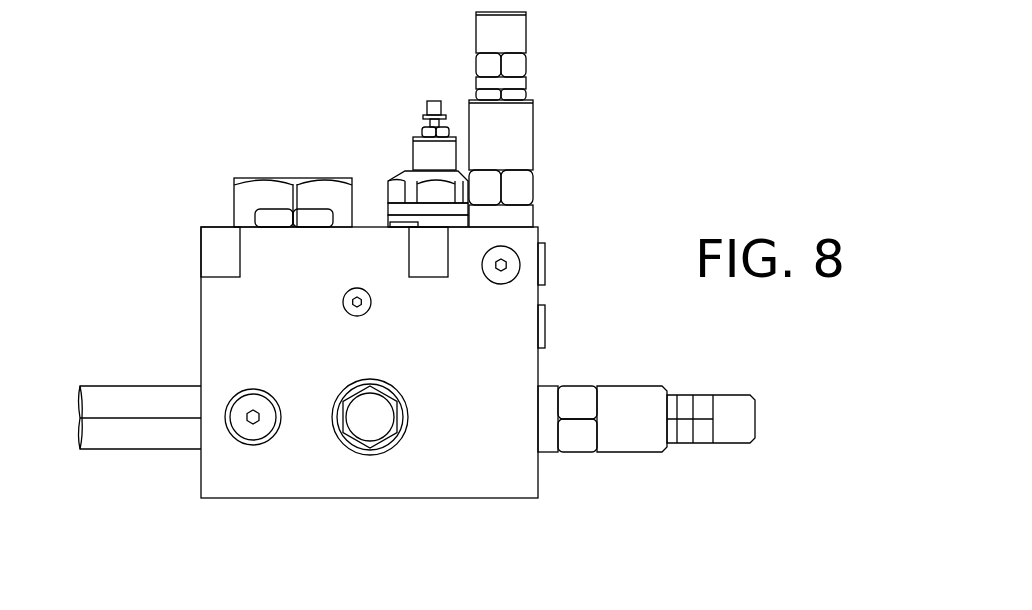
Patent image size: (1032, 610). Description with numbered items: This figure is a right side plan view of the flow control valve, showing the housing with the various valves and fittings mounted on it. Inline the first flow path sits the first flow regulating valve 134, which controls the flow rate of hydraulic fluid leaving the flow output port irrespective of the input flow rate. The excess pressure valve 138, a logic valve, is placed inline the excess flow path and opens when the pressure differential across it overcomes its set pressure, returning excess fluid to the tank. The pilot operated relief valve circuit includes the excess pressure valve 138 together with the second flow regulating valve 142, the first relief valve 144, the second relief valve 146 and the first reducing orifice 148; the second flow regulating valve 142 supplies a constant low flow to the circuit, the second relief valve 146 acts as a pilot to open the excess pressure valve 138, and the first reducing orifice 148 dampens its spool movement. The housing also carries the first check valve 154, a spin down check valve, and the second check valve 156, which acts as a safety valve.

The first flow regulating valve 134 is at (403, 172).
The excess pressure valve 138 is at (128, 442).
The second flow regulating valve 142 is at (367, 452).
The first relief valve 144 is at (627, 385).
The second relief valve 146 is at (525, 132).
The first reducing orifice 148 is at (253, 421).
The first check valve 154 is at (257, 213).
The second check valve 156 is at (260, 183).